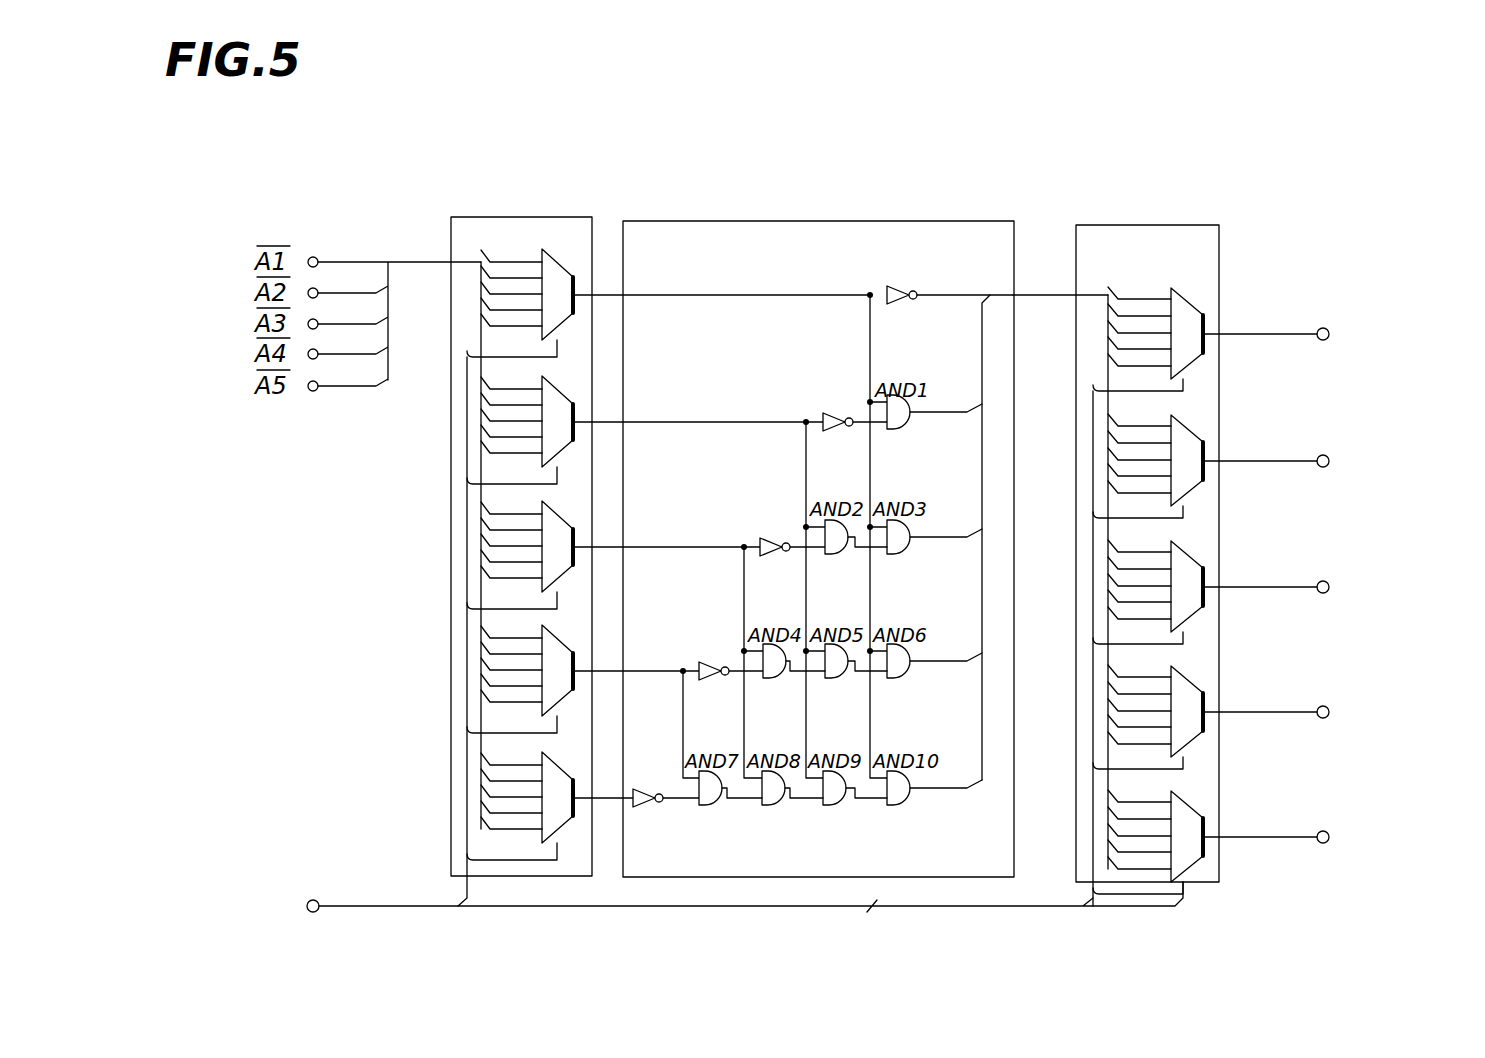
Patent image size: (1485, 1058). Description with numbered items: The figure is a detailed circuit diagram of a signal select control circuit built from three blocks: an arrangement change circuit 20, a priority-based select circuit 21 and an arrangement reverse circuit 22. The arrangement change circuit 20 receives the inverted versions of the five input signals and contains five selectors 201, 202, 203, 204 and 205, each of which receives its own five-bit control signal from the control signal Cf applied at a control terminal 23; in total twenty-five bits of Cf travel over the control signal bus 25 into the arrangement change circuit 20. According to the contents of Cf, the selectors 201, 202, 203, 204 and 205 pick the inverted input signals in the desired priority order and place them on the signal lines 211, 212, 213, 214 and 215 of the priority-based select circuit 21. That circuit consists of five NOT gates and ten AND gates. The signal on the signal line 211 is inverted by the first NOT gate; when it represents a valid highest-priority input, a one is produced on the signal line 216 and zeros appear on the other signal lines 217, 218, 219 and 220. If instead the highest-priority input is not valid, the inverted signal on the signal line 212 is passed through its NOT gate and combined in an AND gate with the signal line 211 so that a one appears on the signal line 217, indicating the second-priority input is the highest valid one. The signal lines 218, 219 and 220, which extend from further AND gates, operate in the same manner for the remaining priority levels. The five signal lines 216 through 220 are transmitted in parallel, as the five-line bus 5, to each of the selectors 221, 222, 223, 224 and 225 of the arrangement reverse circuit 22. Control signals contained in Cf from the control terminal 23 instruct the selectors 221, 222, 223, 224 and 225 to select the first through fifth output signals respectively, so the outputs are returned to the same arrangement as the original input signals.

The arrangement change circuit 20 is at (448, 238).
The priority-based select circuit 21 is at (988, 222).
The arrangement reverse circuit 22 is at (1220, 251).
The control terminal 23 is at (312, 900).
The control signal bus 25 is at (383, 917).
The output signal bus 5 is at (1037, 308).
The selector 201 is at (570, 262).
The selector 202 is at (562, 387).
The selector 203 is at (562, 512).
The selector 204 is at (562, 622).
The selector 205 is at (562, 752).
The signal line 211 is at (690, 295).
The signal line 212 is at (672, 422).
The signal line 213 is at (679, 547).
The signal line 214 is at (641, 671).
The signal line 215 is at (628, 802).
The signal line 216 is at (952, 295).
The signal line 217 is at (948, 412).
The signal line 218 is at (947, 537).
The signal line 219 is at (948, 661).
The signal line 220 is at (955, 788).
The selector 221 is at (1189, 300).
The selector 222 is at (1187, 432).
The selector 223 is at (1187, 558).
The selector 224 is at (1185, 674).
The selector 225 is at (1188, 802).